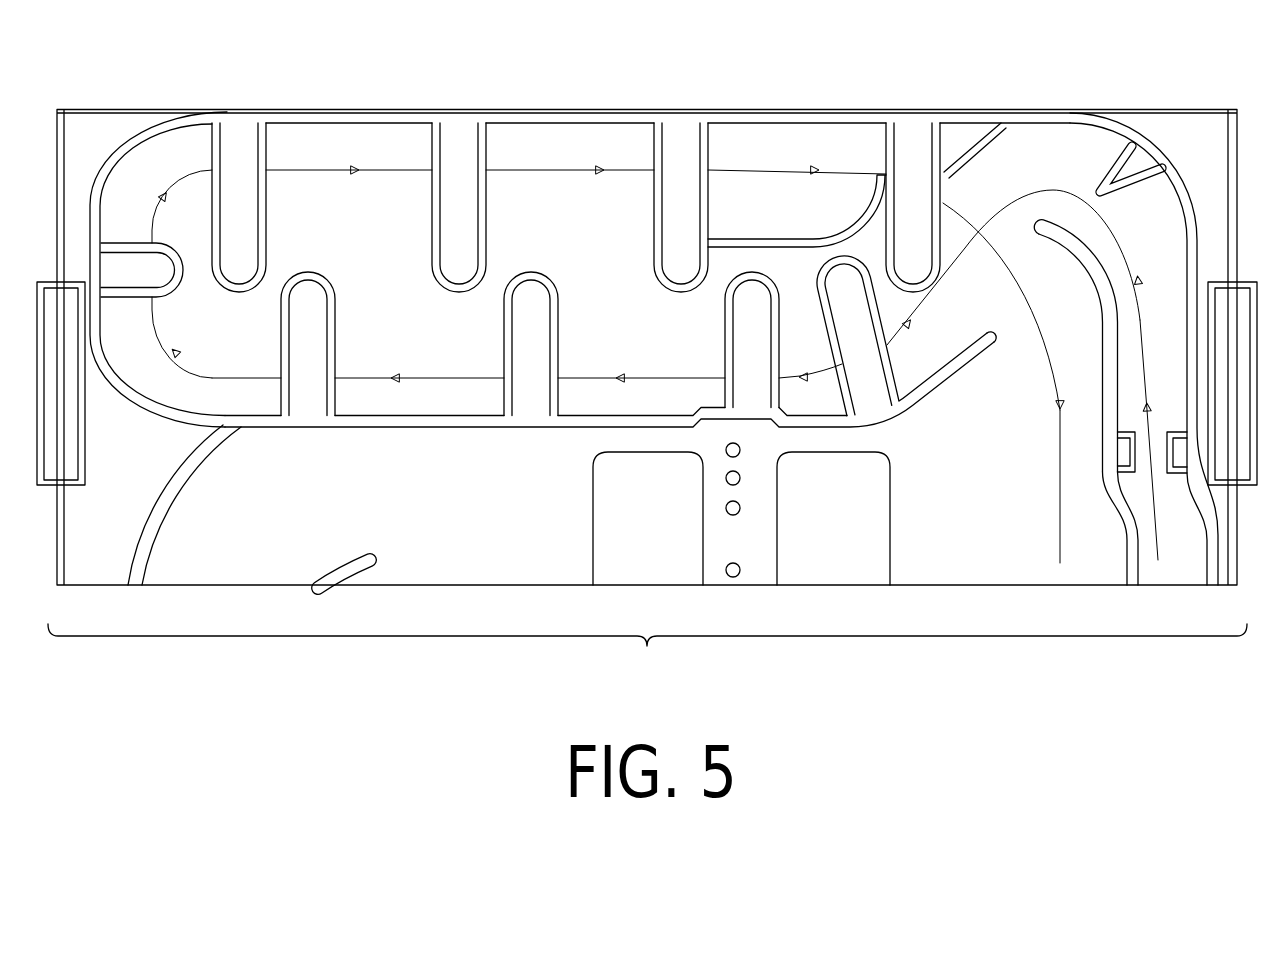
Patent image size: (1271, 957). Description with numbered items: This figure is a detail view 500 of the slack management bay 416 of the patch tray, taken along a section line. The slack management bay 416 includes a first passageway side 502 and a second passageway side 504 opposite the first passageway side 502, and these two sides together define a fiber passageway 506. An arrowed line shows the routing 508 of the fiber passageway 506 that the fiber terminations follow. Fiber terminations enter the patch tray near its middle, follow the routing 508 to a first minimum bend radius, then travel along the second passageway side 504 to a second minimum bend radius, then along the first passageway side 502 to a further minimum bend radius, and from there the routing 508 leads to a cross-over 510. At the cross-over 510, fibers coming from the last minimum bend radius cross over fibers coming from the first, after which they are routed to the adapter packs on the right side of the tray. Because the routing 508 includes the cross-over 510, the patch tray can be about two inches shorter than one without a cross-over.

The slack management bay 416 is at (647, 321).
The detail view 500 is at (647, 650).
The first passageway side 502 is at (560, 123).
The second passageway side 504 is at (582, 415).
The fiber passageway 506 is at (633, 283).
The routing 508 is at (1060, 563).
The cross-over 510 is at (1014, 267).